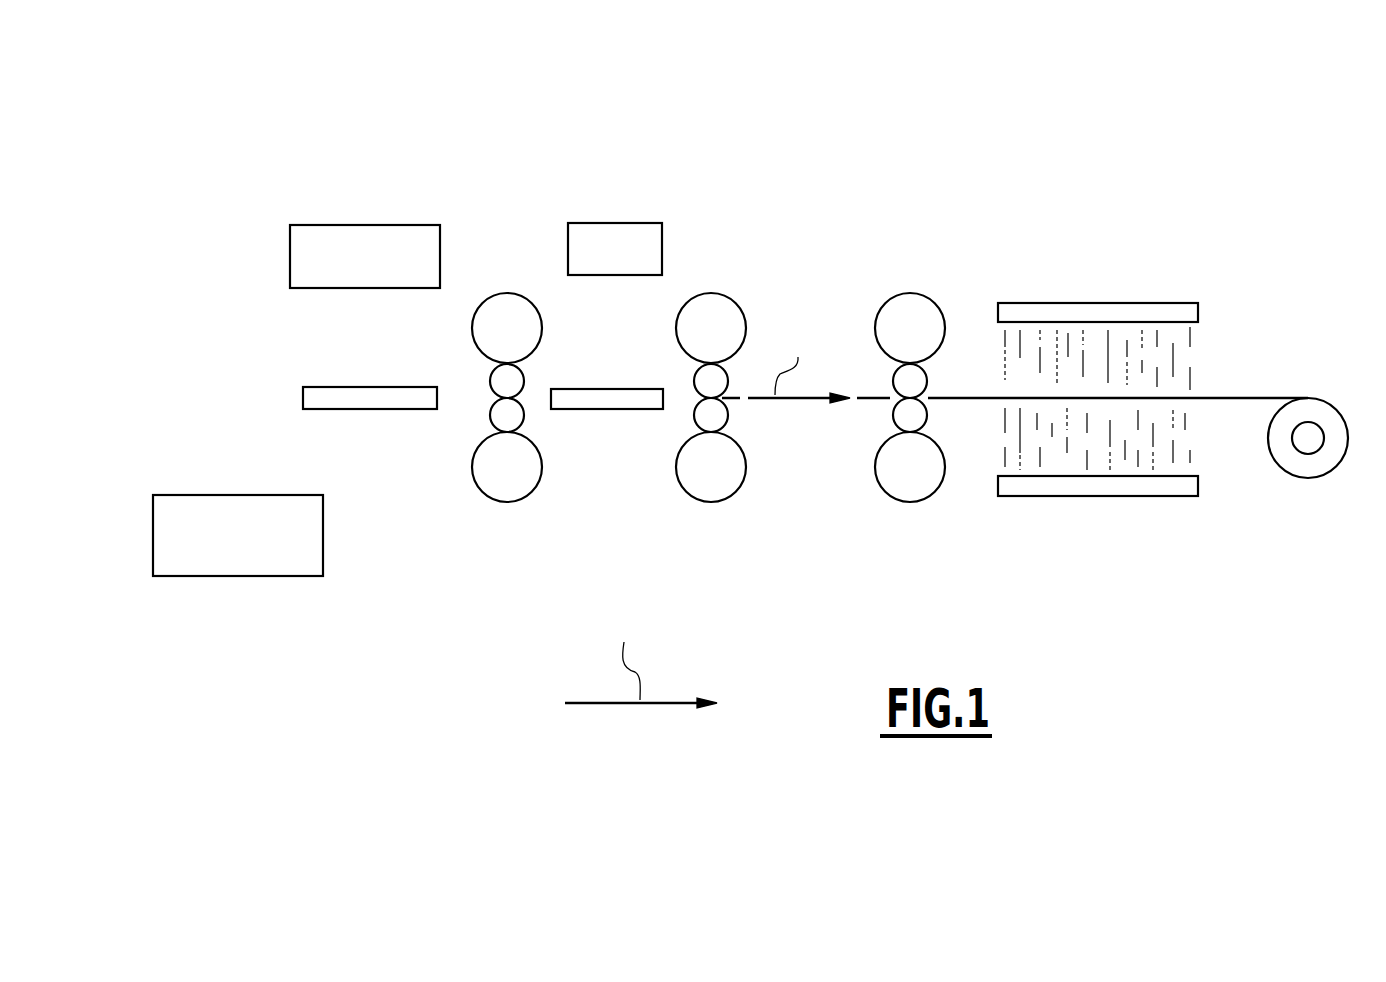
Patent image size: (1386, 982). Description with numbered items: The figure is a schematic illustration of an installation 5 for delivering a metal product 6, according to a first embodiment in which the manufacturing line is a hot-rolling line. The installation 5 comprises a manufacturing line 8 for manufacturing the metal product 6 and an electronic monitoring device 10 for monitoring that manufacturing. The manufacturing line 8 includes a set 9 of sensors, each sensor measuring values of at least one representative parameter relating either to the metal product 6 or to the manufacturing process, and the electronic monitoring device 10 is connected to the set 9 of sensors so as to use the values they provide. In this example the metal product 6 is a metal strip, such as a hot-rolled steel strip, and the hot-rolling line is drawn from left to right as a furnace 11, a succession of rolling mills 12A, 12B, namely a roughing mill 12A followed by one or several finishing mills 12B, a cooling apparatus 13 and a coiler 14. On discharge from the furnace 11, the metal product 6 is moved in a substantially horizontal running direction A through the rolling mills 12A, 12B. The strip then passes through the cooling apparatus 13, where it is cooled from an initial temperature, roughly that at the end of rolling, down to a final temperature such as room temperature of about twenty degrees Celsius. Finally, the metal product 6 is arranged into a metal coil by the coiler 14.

The installation 5 is at (205, 165).
The manufacturing line 8 is at (205, 335).
The metal product 6 is at (374, 398).
The set of sensors 9 is at (615, 249).
The electronic monitoring device 10 is at (365, 256).
The furnace 11 is at (238, 535).
The roughing mill 12A is at (467, 503).
The finishing mill 12B is at (730, 537).
The cooling apparatus 13 is at (1108, 535).
The coiler 14 is at (1333, 517).